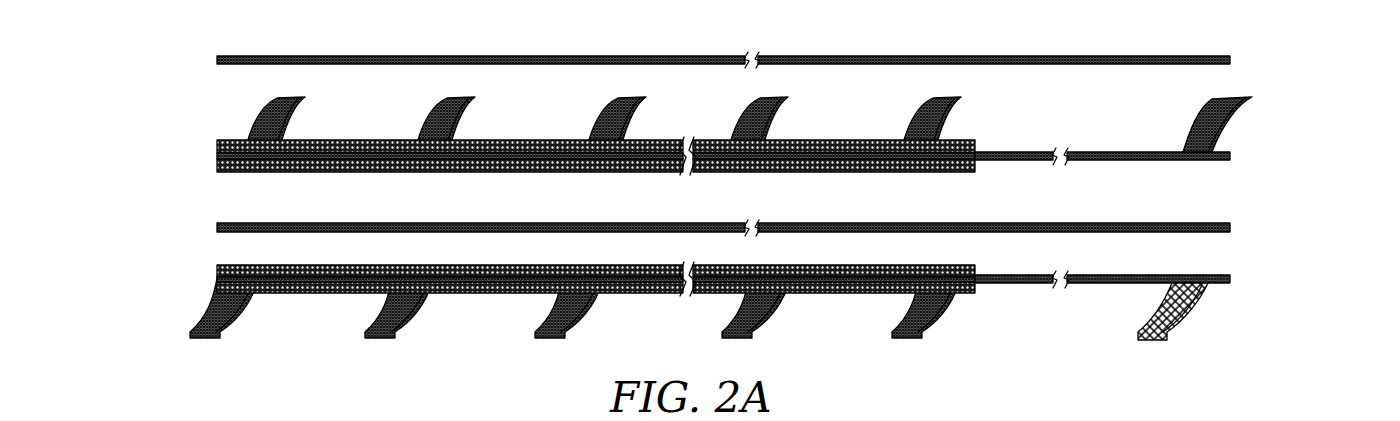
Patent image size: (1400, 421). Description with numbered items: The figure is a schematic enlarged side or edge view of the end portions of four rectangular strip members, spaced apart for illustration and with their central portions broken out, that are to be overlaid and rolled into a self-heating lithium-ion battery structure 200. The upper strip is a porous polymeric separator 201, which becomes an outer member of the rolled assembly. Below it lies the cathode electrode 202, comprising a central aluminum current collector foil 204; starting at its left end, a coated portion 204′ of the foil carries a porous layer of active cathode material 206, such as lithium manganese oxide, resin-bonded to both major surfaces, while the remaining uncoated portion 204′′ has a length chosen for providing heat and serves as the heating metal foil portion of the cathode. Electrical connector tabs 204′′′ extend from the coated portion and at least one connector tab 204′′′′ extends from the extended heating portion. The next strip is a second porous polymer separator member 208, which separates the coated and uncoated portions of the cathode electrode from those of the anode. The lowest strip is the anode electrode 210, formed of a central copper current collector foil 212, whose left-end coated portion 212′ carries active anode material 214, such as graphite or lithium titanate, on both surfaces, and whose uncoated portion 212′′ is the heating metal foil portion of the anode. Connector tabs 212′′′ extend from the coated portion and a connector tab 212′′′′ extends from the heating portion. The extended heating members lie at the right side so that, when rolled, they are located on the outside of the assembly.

The self-heating lithium-ion battery structure 200 is at (1253, 300).
The porous polymeric separator 201 is at (217, 60).
The cathode electrode 202 is at (213, 175).
The cathode current collector foil 204 is at (979, 128).
The cathode-material-coated portion of current collector foil 204′ is at (718, 140).
The uncoated portion of cathode current collector foil 204′′ is at (1107, 152).
The cathode electrical connector tab 204′′′ is at (913, 127).
The cathode heating-portion electrical connector tab 204′′′′ is at (1197, 128).
The active cathode material 206 is at (232, 141).
The second porous polymer separator member 208 is at (217, 226).
The anode electrode 210 is at (202, 342).
The anode current collector foil 212 is at (979, 301).
The anode-material-coated portion of current collector foil 212′ is at (718, 293).
The uncoated portion of anode current collector foil 212′′ is at (1108, 283).
The anode electrical connector tab 212′′′ is at (547, 313).
The anode heating-portion electrical connector tab 212′′′′ is at (1188, 316).
The active anode material 214 is at (290, 264).